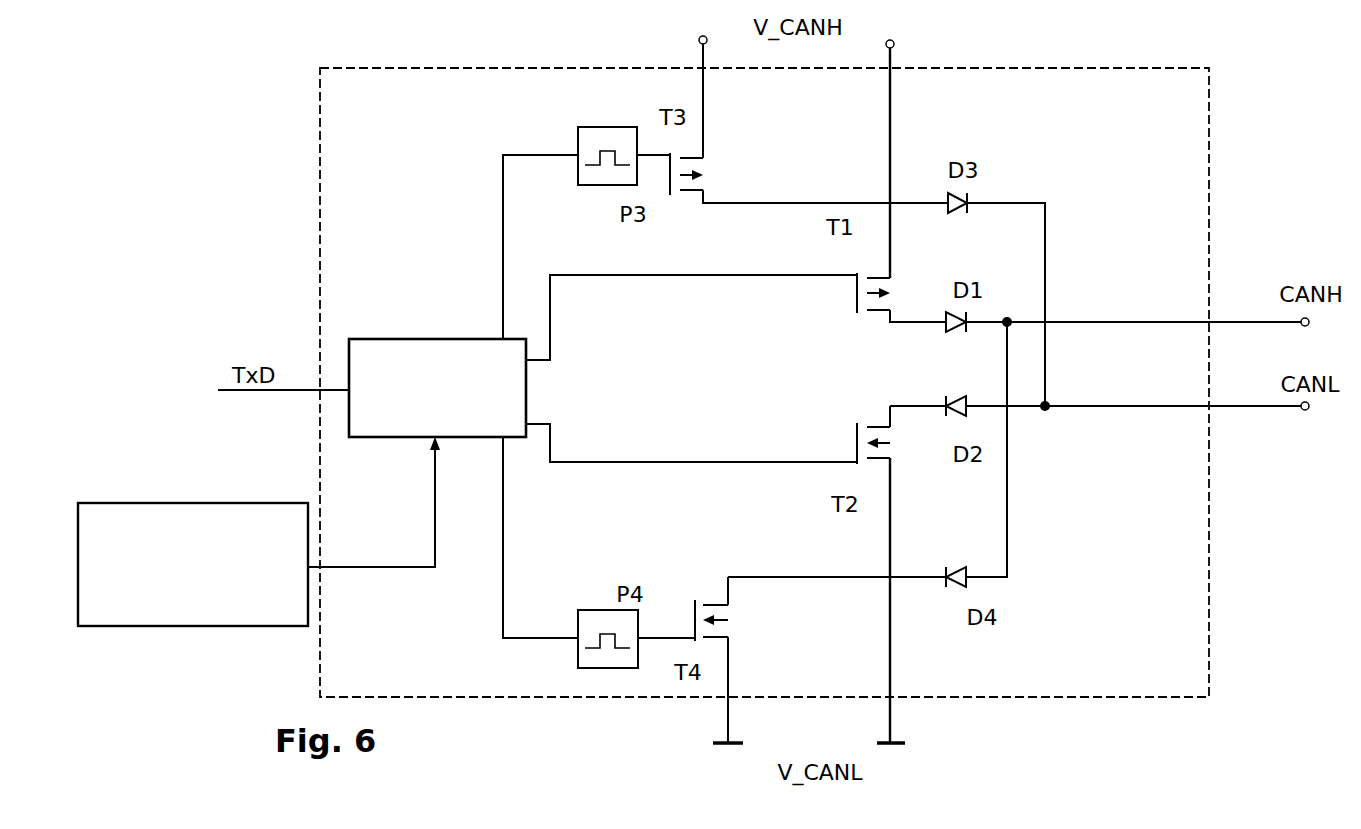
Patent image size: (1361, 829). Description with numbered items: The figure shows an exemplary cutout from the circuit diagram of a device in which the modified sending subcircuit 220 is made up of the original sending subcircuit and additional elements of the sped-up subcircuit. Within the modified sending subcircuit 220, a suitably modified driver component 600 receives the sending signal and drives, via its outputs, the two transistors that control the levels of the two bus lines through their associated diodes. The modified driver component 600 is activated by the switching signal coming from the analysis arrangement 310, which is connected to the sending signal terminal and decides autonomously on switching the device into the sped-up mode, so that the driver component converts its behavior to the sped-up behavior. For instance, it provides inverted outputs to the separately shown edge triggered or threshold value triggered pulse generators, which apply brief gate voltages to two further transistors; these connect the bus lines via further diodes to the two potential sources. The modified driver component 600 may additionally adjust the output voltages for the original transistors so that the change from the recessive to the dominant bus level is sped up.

The modified sending subcircuit 220 is at (764, 382).
The modified driver component 600 is at (437, 388).
The analysis arrangement 310 is at (193, 564).